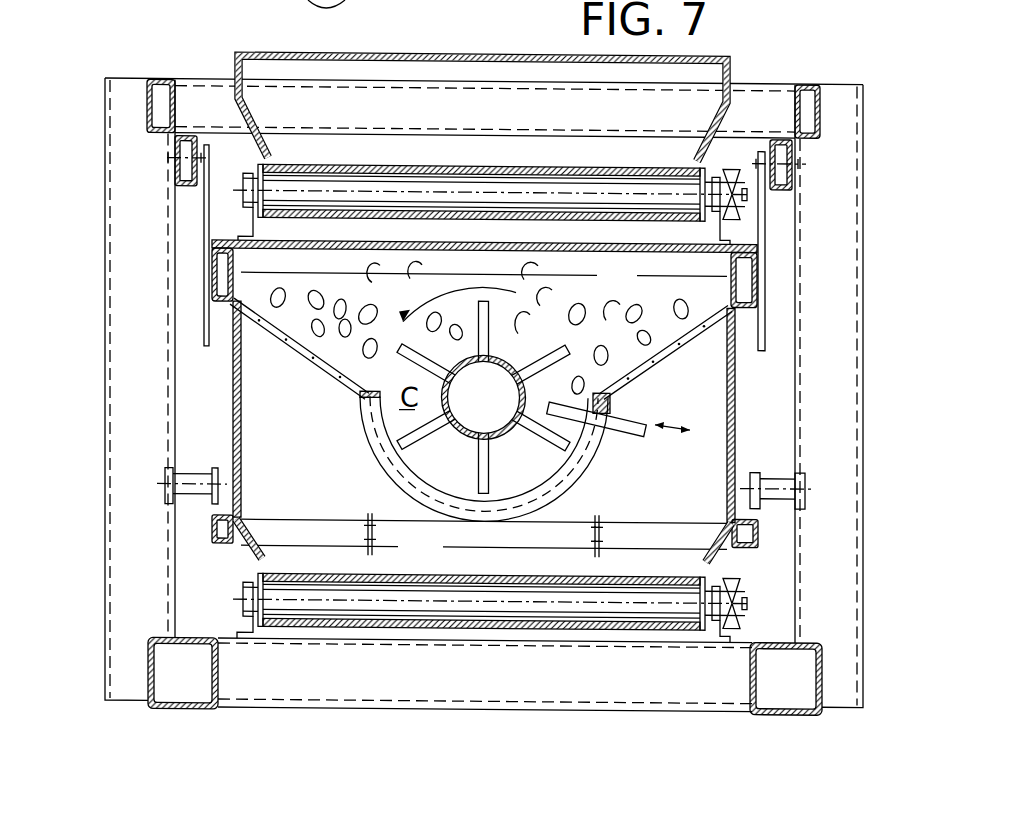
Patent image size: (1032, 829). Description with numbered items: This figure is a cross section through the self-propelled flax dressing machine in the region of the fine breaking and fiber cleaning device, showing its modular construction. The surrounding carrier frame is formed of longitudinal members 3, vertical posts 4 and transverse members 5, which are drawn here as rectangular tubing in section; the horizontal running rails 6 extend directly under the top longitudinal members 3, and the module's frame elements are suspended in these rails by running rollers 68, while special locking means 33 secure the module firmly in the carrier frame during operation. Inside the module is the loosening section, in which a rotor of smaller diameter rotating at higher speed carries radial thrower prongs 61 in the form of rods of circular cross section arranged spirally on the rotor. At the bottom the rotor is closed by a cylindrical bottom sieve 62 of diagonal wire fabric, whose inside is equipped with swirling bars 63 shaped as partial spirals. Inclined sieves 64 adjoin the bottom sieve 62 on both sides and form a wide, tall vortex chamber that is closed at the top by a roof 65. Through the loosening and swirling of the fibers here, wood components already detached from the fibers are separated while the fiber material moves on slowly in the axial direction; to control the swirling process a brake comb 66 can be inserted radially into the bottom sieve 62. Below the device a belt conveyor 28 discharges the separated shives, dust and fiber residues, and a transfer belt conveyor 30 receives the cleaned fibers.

The longitudinal member 3 is at (162, 92).
The vertical post 4 is at (124, 372).
The transverse member 5 is at (472, 95).
The running rail 6 is at (174, 172).
The belt conveyor 28 is at (405, 586).
The transfer belt conveyor 30 is at (520, 181).
The locking means 33 is at (781, 479).
The thrower prong 61 is at (488, 461).
The bottom sieve 62 is at (591, 438).
The swirling bar 63 is at (427, 489).
The inclined sieve 64 is at (284, 342).
The roof 65 is at (614, 245).
The brake comb 66 is at (628, 405).
The running roller 68 is at (183, 148).